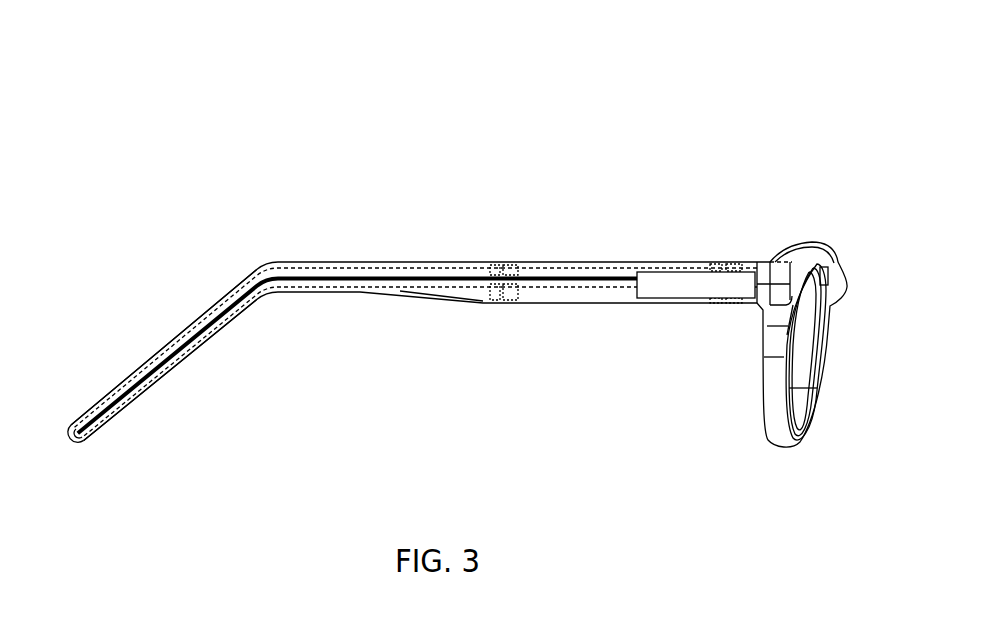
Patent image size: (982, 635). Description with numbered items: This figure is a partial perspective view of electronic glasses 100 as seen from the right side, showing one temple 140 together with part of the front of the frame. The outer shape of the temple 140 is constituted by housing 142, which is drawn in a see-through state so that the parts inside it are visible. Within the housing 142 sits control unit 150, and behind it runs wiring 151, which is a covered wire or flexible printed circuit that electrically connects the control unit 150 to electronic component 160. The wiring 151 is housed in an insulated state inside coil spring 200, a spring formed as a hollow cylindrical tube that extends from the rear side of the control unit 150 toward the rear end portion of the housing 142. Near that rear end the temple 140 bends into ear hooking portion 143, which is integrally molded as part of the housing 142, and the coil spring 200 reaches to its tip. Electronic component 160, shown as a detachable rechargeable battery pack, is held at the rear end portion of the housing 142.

The electronic glasses 100 is at (735, 46).
The coil spring 200 is at (295, 267).
The temple 140 is at (557, 305).
The housing 142 is at (419, 352).
The wiring 151 is at (412, 283).
The control unit 150 is at (708, 287).
The ear hooking portion 143 is at (135, 395).
The electronic component 160 is at (78, 440).